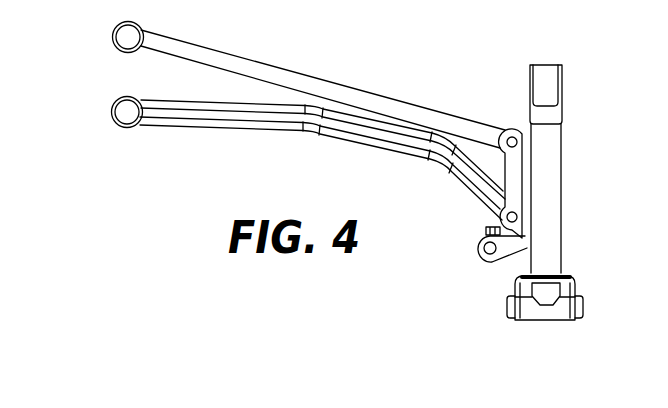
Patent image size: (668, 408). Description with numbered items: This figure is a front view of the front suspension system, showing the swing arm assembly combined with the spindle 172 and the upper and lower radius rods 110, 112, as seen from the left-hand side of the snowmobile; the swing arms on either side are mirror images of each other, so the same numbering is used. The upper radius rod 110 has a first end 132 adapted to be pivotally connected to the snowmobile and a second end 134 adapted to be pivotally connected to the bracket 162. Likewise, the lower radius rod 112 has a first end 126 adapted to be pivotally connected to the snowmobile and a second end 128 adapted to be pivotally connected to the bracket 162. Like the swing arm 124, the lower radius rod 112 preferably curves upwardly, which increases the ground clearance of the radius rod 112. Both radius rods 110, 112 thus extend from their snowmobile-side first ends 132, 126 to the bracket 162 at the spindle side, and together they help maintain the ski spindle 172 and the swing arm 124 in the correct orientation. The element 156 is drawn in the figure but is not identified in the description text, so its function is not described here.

The upper radius rod 110 is at (241, 57).
The lower radius rod 112 is at (222, 124).
The swing arm 124 is at (548, 75).
The first end of radius rod 112 126 is at (123, 120).
The second end of radius rod 112 128 is at (503, 217).
The first end of radius rod 110 132 is at (121, 41).
The second end of radius rod 110 134 is at (500, 131).
The column 156 is at (553, 189).
The bracket 162 is at (514, 130).
The spindle 172 is at (557, 312).